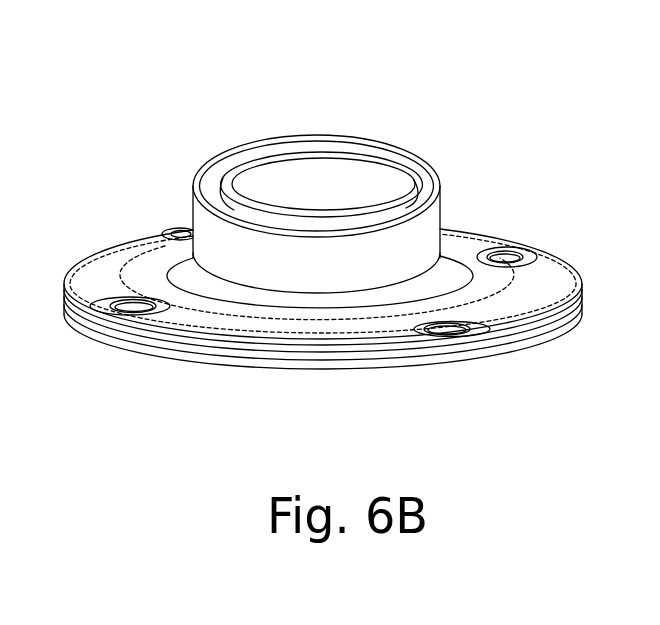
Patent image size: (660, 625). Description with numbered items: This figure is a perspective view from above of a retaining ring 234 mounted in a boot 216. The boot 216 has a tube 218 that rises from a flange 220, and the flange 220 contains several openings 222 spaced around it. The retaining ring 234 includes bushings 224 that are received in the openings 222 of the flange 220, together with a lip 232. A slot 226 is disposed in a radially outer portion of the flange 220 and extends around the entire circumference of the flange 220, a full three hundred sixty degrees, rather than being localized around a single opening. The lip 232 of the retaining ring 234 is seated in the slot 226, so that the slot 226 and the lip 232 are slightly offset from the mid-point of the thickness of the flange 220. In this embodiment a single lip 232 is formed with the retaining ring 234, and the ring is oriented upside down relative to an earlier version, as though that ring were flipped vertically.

The boot 216 is at (190, 204).
The tube 218 is at (440, 207).
The flange 220 is at (150, 253).
The openings 222 is at (100, 303).
The bushings 224 is at (174, 237).
The slot 226 is at (160, 320).
The lip 232 is at (313, 352).
The retaining ring 234 is at (229, 355).